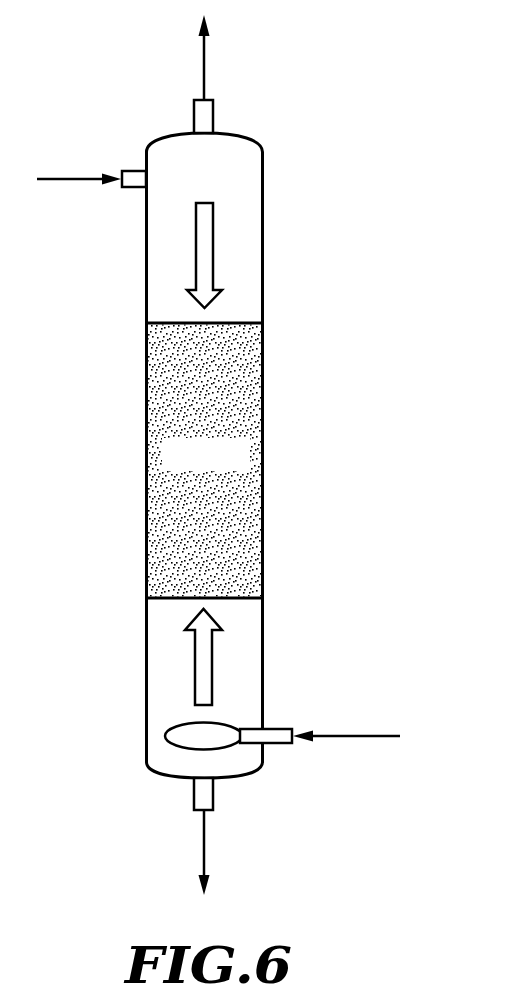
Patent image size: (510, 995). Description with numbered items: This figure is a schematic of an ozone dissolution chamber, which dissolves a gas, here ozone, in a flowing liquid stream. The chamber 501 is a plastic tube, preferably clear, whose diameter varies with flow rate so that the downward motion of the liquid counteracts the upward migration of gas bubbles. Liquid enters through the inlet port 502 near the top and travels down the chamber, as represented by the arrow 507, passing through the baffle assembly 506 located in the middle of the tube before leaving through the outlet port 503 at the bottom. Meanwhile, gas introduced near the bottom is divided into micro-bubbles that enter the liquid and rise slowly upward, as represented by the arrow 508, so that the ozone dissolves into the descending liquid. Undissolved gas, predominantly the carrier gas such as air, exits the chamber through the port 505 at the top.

The chamber 501 is at (263, 266).
The inlet port 502 is at (135, 187).
The outlet port 503 is at (194, 797).
The port 505 is at (213, 113).
The baffle assembly 506 is at (212, 478).
The arrow 507 is at (213, 246).
The arrow 508 is at (213, 667).